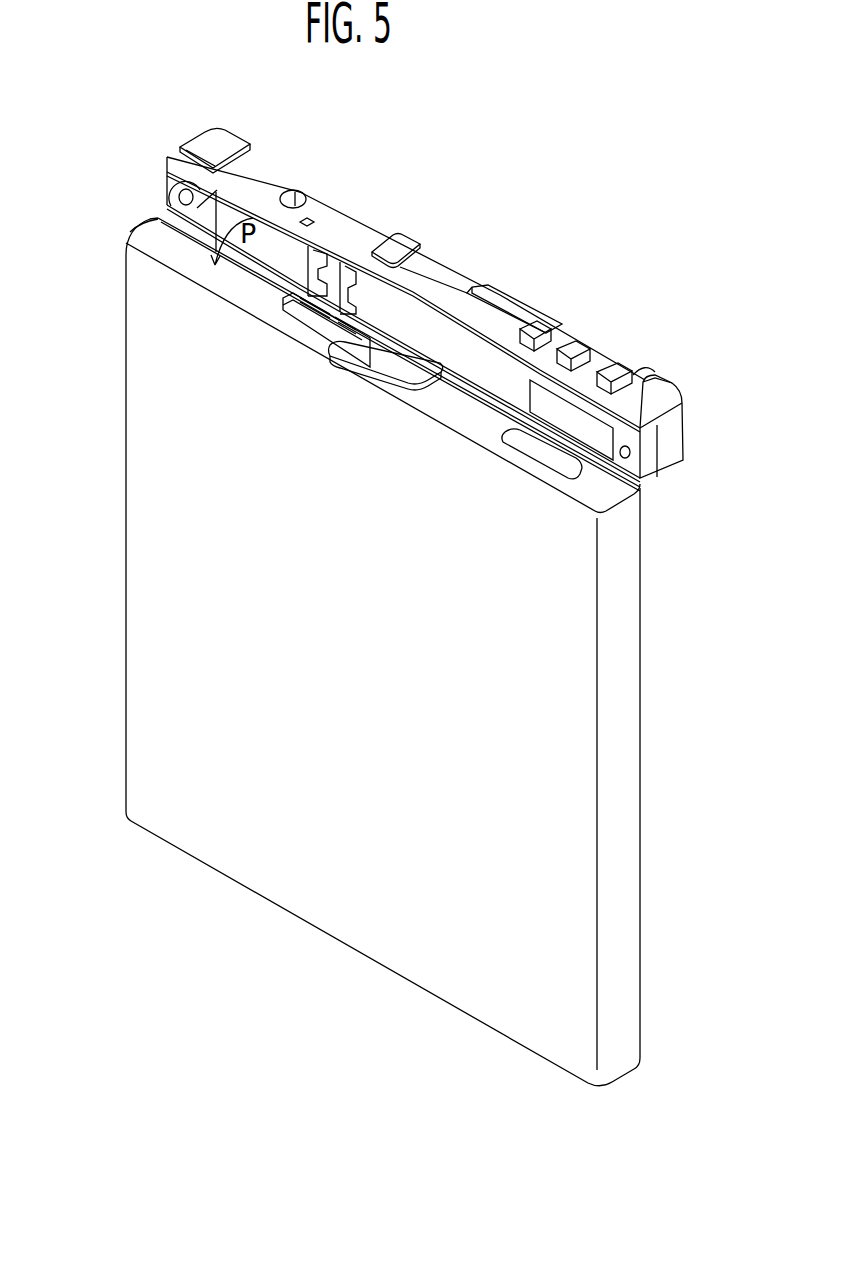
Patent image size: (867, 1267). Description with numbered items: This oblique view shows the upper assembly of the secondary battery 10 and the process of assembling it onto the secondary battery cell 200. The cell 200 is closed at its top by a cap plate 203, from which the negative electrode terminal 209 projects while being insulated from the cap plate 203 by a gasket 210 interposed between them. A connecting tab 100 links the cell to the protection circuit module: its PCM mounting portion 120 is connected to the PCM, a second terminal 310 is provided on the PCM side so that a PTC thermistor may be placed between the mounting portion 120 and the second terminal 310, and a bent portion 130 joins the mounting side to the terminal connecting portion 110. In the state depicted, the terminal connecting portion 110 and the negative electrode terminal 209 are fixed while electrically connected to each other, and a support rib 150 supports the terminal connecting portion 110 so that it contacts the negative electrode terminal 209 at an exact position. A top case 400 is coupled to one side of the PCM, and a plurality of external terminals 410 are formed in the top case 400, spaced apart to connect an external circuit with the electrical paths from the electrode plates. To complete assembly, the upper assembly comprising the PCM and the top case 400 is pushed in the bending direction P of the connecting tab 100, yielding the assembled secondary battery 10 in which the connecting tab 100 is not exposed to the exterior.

The secondary battery 10 is at (645, 184).
The connecting tab 100 is at (372, 342).
The terminal connecting portion 110 is at (445, 342).
The PCM mounting portion 120 is at (322, 282).
The bent portion 130 is at (290, 280).
The support rib 150 is at (408, 363).
The secondary battery cell 200 is at (641, 778).
The cap plate 203 is at (160, 232).
The negative electrode terminal 209 is at (375, 367).
The gasket 210 is at (443, 362).
The second terminal 310 is at (365, 320).
The top case 400 is at (687, 441).
The external terminals 410 is at (635, 378).